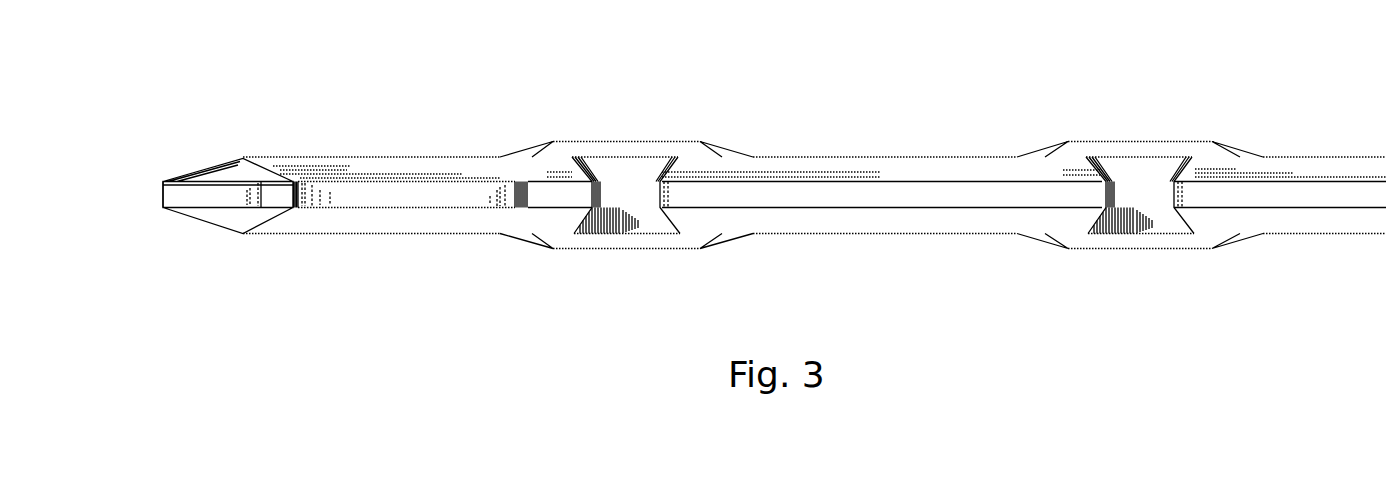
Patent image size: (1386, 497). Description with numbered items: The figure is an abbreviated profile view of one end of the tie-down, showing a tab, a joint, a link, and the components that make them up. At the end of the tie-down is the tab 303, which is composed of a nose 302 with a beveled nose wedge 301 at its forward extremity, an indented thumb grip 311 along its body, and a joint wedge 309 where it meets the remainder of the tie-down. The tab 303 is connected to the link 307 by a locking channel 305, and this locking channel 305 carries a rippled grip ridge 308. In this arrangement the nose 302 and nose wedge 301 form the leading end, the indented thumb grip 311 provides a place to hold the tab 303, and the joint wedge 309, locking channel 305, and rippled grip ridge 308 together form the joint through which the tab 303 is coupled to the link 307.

The nose wedge 301 is at (222, 217).
The nose 302 is at (208, 195).
The tab 303 is at (162, 145).
The locking channel 305 is at (625, 197).
The link 307 is at (892, 156).
The rippled grip ridge 308 is at (623, 140).
The joint wedge 309 is at (1020, 155).
The indented thumb grip 311 is at (415, 197).